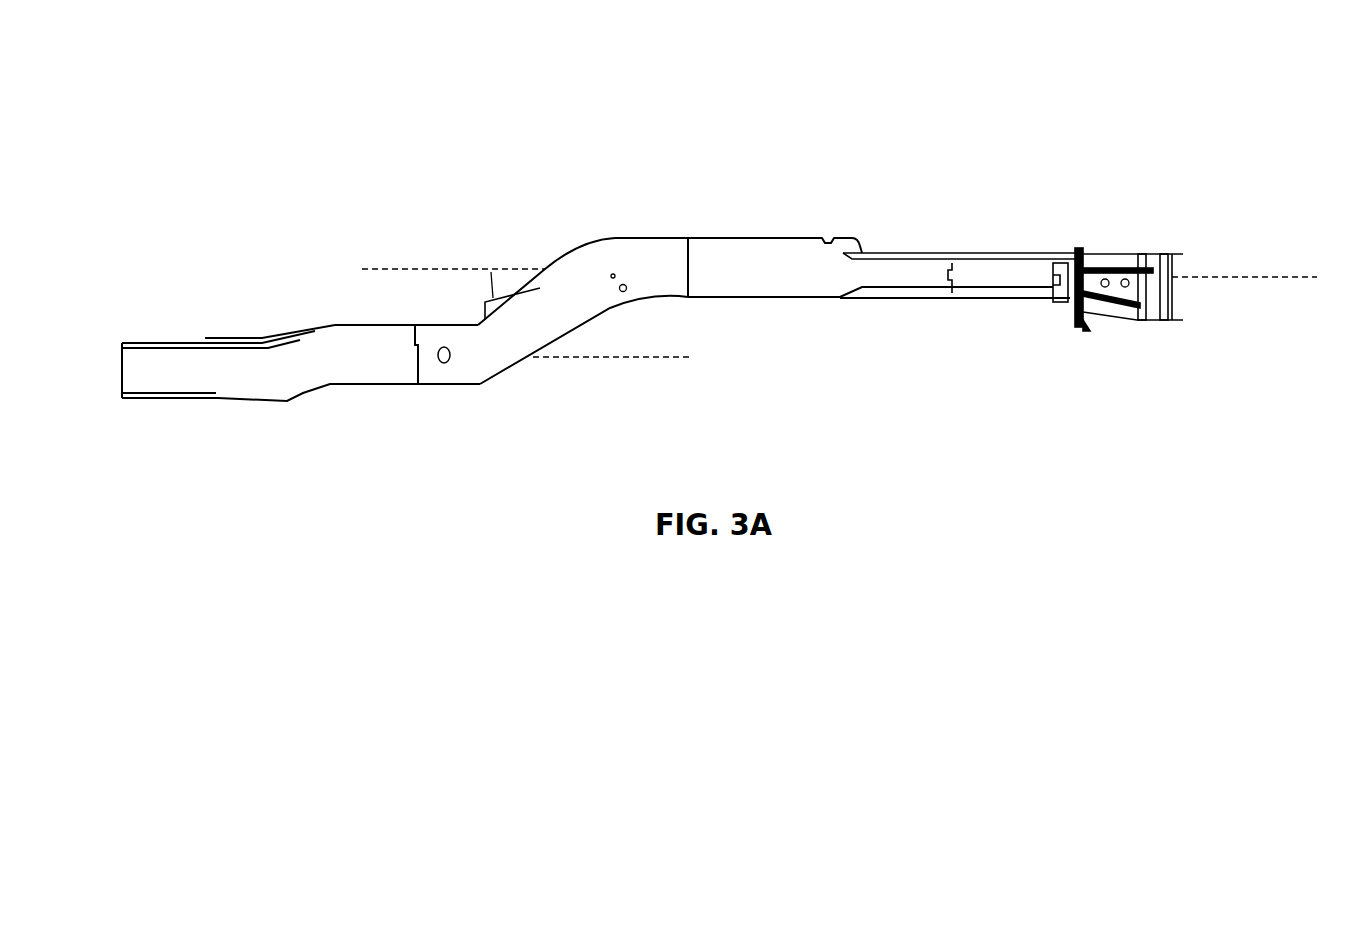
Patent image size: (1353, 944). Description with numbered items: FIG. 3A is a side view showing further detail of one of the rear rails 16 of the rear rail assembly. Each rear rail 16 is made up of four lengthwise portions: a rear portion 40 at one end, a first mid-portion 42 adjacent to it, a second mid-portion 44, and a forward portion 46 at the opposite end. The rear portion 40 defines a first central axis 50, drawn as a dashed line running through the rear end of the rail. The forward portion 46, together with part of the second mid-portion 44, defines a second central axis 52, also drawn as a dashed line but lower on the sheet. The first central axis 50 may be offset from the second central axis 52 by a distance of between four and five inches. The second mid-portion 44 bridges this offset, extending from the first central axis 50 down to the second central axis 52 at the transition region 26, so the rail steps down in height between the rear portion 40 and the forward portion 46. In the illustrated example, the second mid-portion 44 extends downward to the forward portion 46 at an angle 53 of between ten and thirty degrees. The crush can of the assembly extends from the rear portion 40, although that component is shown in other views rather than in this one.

The rear rail 16 is at (1055, 118).
The transition region 26 is at (608, 317).
The rear portion 40 is at (1017, 255).
The first mid-portion 42 is at (775, 238).
The second mid-portion 44 is at (558, 262).
The forward portion 46 is at (340, 323).
The first central axis 50 is at (410, 267).
The second central axis 52 is at (612, 358).
The angle 53 is at (490, 290).